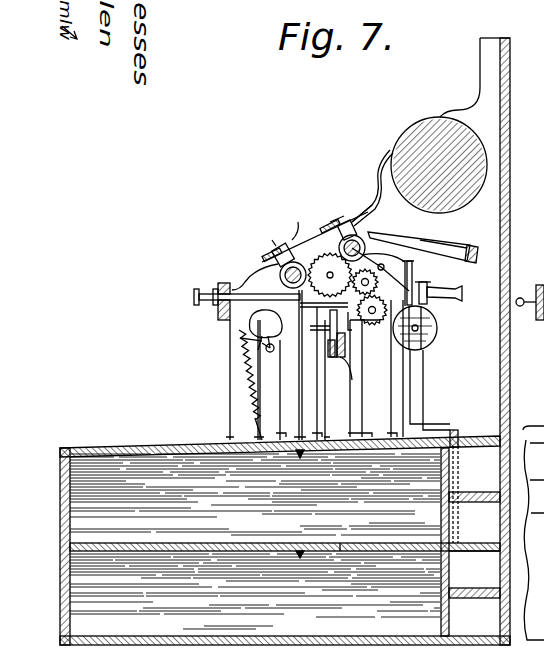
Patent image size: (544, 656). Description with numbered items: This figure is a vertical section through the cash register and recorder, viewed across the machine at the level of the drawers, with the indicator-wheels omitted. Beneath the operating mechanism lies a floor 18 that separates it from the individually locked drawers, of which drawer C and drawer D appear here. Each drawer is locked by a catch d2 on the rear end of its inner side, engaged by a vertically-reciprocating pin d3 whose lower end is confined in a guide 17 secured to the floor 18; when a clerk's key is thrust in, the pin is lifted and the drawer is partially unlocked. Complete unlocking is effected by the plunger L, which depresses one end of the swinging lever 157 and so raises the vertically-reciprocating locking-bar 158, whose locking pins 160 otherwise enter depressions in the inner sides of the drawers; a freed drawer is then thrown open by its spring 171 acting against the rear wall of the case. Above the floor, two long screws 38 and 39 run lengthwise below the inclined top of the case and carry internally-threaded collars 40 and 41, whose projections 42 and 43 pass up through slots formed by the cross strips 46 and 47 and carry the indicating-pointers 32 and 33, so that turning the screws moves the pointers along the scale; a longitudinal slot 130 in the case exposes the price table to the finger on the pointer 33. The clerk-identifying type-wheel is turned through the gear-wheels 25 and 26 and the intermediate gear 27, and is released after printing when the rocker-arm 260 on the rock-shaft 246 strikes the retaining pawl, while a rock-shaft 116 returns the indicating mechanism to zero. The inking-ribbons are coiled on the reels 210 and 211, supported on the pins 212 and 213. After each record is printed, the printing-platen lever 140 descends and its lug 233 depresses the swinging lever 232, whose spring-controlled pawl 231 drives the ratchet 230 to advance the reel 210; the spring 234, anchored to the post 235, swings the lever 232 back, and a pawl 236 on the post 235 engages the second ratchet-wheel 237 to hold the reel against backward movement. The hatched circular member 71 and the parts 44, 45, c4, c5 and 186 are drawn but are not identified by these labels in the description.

The roller 71 is at (478, 144).
The projection 43 is at (372, 200).
The strips 47 is at (335, 220).
The indicating-pointer 33 is at (332, 220).
The rod 44 is at (270, 254).
The indicating-pointer 32 is at (284, 246).
The projection 42 is at (276, 246).
The strips 46 is at (298, 222).
The block 45 is at (356, 222).
The dollar-screw 38 is at (262, 262).
The internally-threaded collar 40 is at (282, 280).
The cent-registering screw 39 is at (362, 240).
The gear-wheel 26 is at (326, 262).
The intermediate gear 27 is at (395, 287).
The gear-wheel 25 is at (373, 326).
The internally-threaded collar 41 is at (392, 234).
The rocker-arm 260 is at (430, 240).
The rock-shaft 246 is at (474, 246).
The longitudinal slot 130 is at (381, 267).
The rock-shaft 116 is at (412, 280).
The bracket c4 is at (430, 290).
The shaft c5 is at (462, 294).
The supporting-pin 213 is at (440, 324).
The roller 211 is at (437, 338).
The reciprocating pin d3 is at (427, 378).
The guide 17 is at (460, 430).
The floor 18 is at (380, 434).
The reel 210 is at (258, 320).
The lug 233 is at (318, 326).
The printing-platen lever 140 is at (337, 324).
The support 186 is at (356, 340).
The ratchet 230 is at (286, 330).
The spring-controlled pawl 231 is at (318, 340).
The swinging lever 232 is at (352, 380).
The supporting-pin 212 is at (258, 388).
The second ratchet-wheel 237 is at (242, 333).
The pawl 236 is at (262, 346).
The spring 234 is at (244, 362).
The post 235 is at (252, 392).
The drawer C is at (255, 494).
The drawer D is at (255, 591).
The locking pins 160 is at (301, 556).
The locking-bar 158 is at (318, 543).
The spring 171 is at (466, 588).
The partition d2 is at (455, 552).
The plunger L is at (530, 292).
The swinging lever 157 is at (528, 497).